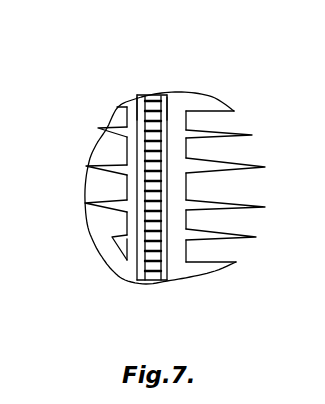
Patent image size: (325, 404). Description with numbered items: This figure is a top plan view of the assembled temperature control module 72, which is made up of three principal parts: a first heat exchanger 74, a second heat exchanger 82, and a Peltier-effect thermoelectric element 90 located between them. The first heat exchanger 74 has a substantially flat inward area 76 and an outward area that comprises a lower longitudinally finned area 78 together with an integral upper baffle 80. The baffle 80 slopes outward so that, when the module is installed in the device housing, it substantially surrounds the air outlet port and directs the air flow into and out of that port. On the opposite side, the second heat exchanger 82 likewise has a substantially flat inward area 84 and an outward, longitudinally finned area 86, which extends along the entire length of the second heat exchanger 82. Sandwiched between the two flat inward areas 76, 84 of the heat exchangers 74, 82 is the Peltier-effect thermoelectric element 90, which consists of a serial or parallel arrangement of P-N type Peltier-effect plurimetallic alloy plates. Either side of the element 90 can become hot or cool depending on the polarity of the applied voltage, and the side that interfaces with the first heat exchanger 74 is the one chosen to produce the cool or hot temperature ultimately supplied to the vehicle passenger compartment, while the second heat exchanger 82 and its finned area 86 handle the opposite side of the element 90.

The temperature control module 72 is at (124, 81).
The substantially flat inward area 76 is at (176, 98).
The substantially flat inward area 84 is at (163, 127).
The Peltier-effect thermoelectric element 90 is at (157, 280).
The first heat exchanger 74 is at (96, 157).
The upper baffle 80 is at (97, 188).
The lower longitudinally finned area 78 is at (113, 237).
The second heat exchanger 82 is at (250, 134).
The longitudinally finned area 86 is at (207, 209).